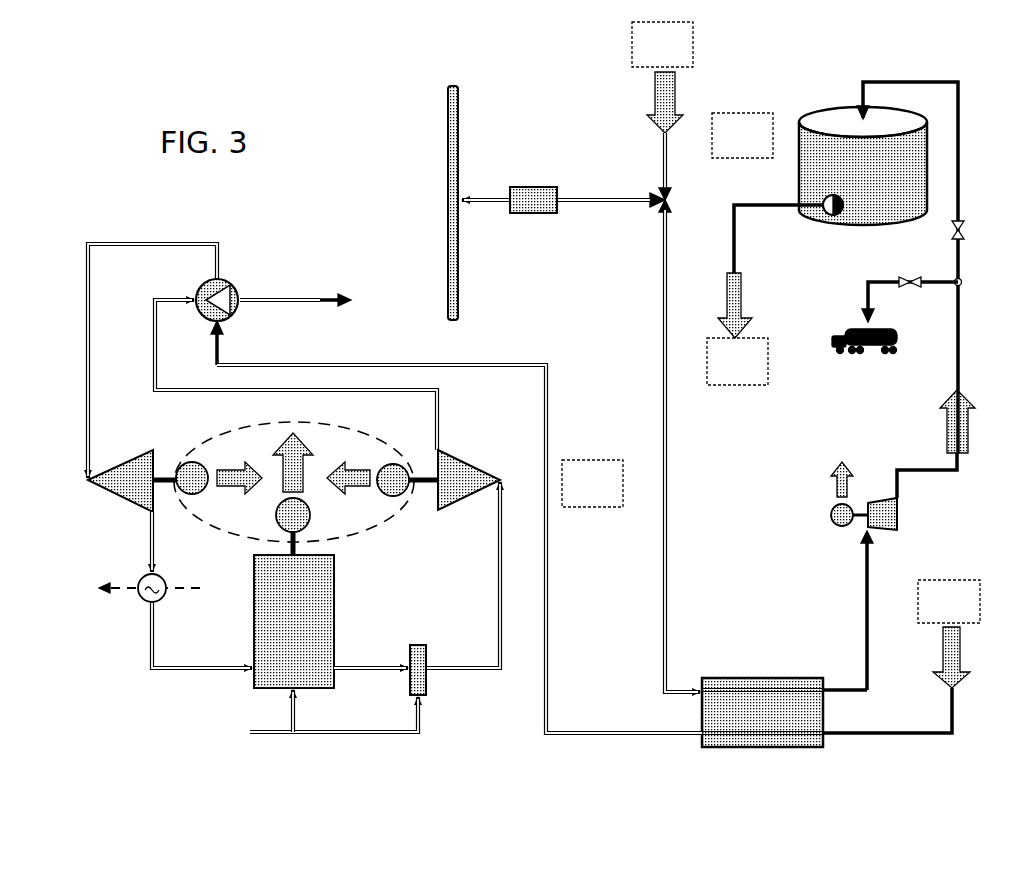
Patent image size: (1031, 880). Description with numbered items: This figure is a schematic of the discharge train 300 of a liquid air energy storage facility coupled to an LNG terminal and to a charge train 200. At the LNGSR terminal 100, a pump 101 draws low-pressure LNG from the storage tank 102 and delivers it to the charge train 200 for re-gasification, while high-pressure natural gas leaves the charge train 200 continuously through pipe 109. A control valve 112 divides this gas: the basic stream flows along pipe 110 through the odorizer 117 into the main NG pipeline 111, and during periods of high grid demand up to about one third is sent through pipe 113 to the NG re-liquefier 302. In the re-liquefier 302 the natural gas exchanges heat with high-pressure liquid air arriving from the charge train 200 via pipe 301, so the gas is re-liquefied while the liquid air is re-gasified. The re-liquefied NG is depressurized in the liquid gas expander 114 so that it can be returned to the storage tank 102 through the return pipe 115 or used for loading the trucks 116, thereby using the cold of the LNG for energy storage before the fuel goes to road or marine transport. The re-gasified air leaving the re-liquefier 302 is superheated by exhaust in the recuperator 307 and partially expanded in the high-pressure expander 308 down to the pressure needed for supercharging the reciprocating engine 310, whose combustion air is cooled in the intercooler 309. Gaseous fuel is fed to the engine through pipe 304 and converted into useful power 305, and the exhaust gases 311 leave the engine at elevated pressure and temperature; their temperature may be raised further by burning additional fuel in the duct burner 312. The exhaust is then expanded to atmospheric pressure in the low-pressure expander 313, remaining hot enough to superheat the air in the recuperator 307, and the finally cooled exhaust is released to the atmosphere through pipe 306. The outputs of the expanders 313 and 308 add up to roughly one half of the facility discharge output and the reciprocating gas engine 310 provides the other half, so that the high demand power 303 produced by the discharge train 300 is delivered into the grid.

The first system 100 is at (742, 135).
The pump 101 is at (826, 213).
The storage tank 102 is at (810, 110).
The pipe 109 is at (663, 165).
The pipe 110 is at (617, 197).
The main NG pipeline 111 is at (447, 137).
The control valve 112 is at (650, 205).
The pipe 113 is at (668, 472).
The liquid gas expander 114 is at (899, 512).
The return pipe 115 is at (960, 170).
The trucks 116 is at (866, 305).
The odorizer 117 is at (545, 212).
The CH train 200 is at (806, 355).
The discharge (DCH) train 300 is at (592, 483).
The pipe 301 is at (960, 722).
The NG re-liquefier 302 is at (736, 678).
The high demand power 303 is at (548, 572).
The pipe 304 is at (250, 732).
The useful power 305 is at (313, 470).
The pipe 306 is at (350, 300).
The recuperator 307 is at (240, 289).
The high-pressure (HP) expander 308 is at (113, 492).
The intercooler 309 is at (165, 580).
The reciprocating engine 310 is at (336, 607).
The stream of exhaust gases 311 is at (360, 666).
The duct burner 312 is at (428, 650).
The low-pressure (LP) expander 313 is at (470, 468).